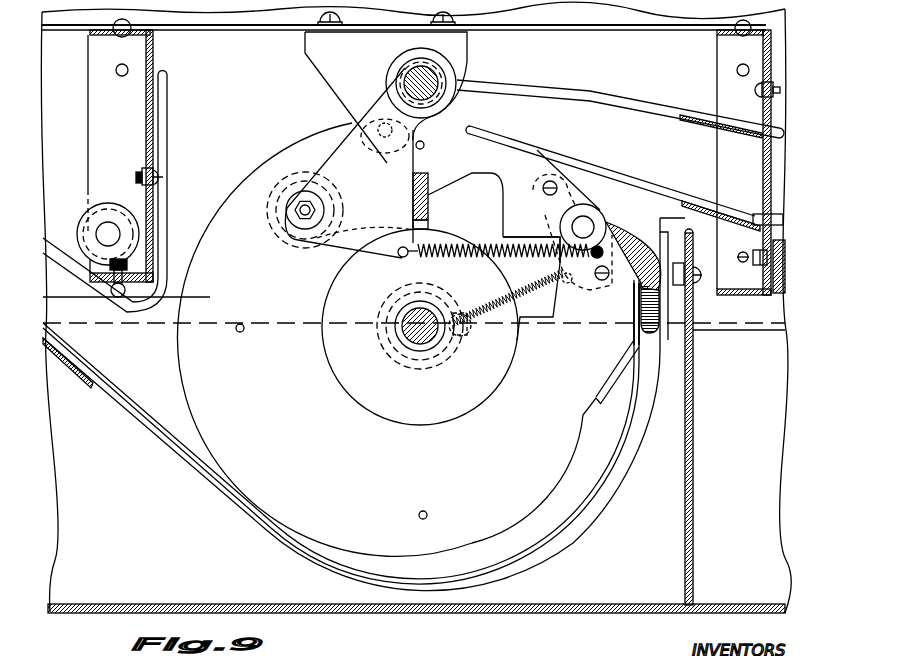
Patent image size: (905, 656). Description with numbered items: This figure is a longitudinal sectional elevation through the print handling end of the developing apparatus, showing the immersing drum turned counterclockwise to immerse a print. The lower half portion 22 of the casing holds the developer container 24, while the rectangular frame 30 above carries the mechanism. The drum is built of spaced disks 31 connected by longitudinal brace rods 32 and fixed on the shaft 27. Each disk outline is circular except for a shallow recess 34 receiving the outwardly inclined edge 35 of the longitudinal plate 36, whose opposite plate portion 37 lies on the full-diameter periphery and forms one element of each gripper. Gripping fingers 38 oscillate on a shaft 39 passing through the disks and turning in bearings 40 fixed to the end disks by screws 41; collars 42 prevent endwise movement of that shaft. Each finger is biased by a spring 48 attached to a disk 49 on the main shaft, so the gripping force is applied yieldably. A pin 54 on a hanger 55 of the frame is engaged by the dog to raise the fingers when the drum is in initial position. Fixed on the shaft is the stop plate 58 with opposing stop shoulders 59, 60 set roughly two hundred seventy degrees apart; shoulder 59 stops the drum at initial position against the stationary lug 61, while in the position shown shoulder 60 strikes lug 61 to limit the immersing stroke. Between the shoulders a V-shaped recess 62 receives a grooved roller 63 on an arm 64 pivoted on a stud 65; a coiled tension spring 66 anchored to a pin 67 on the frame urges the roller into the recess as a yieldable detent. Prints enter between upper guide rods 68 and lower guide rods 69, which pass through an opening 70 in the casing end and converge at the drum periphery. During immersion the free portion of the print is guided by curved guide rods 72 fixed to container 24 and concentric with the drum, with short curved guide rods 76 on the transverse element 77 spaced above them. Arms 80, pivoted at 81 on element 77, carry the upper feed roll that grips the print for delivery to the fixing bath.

The lower half portion 22 is at (783, 550).
The container 24 is at (695, 483).
The shaft 27 is at (427, 340).
The rectangular frame 30 is at (725, 43).
The disks 31 is at (233, 387).
The brace rods 32 is at (240, 333).
The recesses 34 is at (587, 413).
The outwardly inclined edge 35 is at (605, 381).
The longitudinal plate 36 is at (633, 342).
The plate portion 37 is at (634, 307).
The fingers 38 is at (657, 310).
The shaft 39 is at (600, 219).
The bearings 40 is at (588, 207).
The screws 41 is at (546, 183).
The collars 42 is at (563, 222).
The spring 48 is at (492, 289).
The disk 49 is at (433, 290).
The pin 54 is at (370, 146).
The hanger 55 is at (455, 44).
The stop plate 58 is at (468, 410).
The stop shoulder 59 is at (537, 322).
The stop shoulder 60 is at (428, 222).
The lug 61 is at (428, 175).
The V-shaped recess 62 is at (514, 228).
The grooved roller 63 is at (290, 243).
The arm 64 is at (338, 142).
The stud 65 is at (403, 73).
The coiled tension spring 66 is at (487, 257).
The pin 67 is at (612, 242).
The upper guide rods 68 is at (627, 101).
The lower guide rods 69 is at (675, 194).
The opening 70 is at (765, 163).
The guide rods 72 is at (120, 393).
The short curved guide rods 76 is at (141, 312).
The transverse element 77 is at (153, 68).
The arms 80 is at (127, 207).
The pivot 81 is at (113, 215).